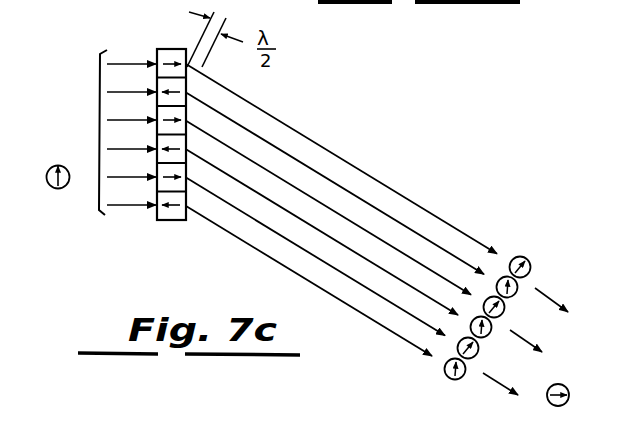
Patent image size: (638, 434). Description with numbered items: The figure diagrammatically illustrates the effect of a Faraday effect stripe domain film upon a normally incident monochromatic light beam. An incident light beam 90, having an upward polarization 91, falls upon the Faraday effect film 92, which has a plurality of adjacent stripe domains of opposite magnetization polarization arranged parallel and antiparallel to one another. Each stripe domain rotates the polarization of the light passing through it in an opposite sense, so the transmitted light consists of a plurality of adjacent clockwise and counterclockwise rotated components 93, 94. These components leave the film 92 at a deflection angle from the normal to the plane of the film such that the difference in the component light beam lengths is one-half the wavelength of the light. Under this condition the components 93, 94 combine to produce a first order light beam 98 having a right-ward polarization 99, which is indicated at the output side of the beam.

The incident light beam 90 is at (106, 132).
The upward polarization 91 is at (60, 188).
The Faraday effect film 92 is at (167, 222).
The clockwise rotated component 93 is at (417, 203).
The counterclockwise rotated component 94 is at (432, 239).
The first order light beam 98 is at (573, 300).
The right-ward polarization 99 is at (567, 403).